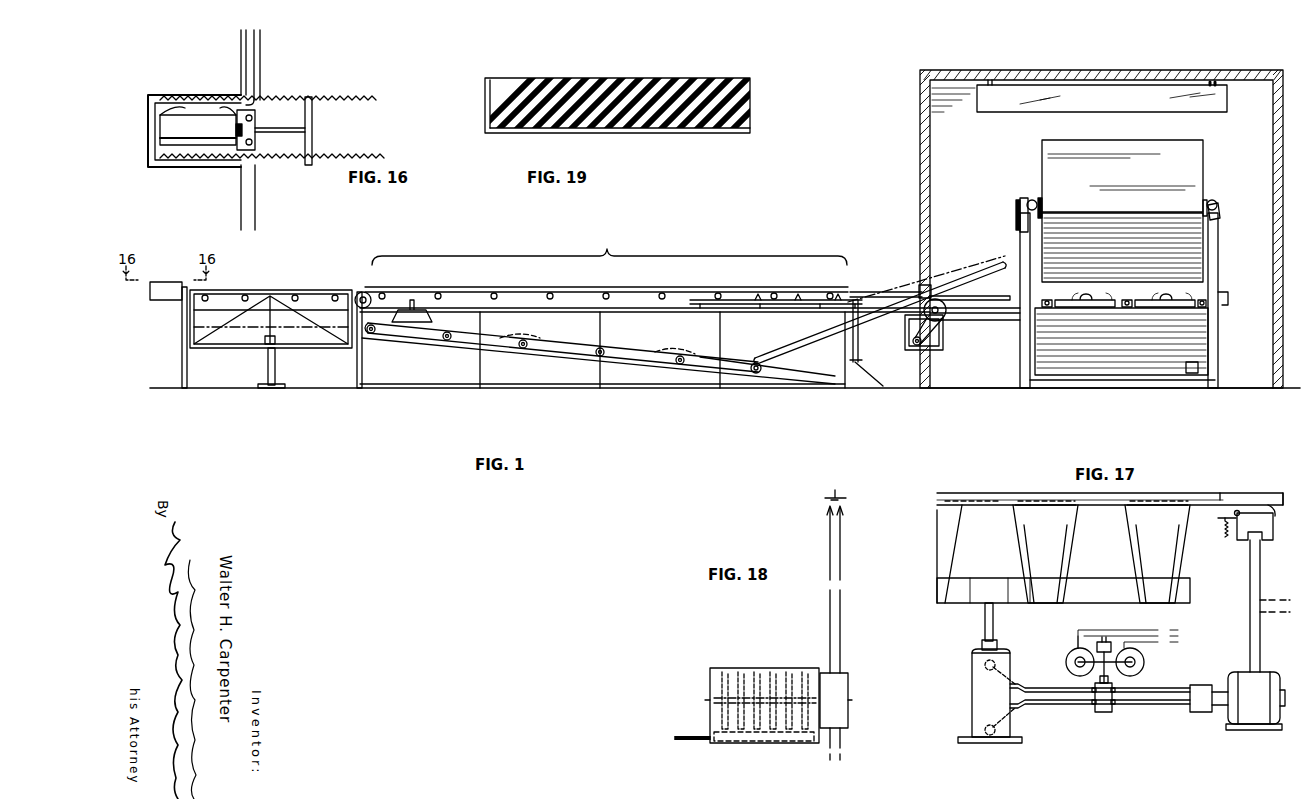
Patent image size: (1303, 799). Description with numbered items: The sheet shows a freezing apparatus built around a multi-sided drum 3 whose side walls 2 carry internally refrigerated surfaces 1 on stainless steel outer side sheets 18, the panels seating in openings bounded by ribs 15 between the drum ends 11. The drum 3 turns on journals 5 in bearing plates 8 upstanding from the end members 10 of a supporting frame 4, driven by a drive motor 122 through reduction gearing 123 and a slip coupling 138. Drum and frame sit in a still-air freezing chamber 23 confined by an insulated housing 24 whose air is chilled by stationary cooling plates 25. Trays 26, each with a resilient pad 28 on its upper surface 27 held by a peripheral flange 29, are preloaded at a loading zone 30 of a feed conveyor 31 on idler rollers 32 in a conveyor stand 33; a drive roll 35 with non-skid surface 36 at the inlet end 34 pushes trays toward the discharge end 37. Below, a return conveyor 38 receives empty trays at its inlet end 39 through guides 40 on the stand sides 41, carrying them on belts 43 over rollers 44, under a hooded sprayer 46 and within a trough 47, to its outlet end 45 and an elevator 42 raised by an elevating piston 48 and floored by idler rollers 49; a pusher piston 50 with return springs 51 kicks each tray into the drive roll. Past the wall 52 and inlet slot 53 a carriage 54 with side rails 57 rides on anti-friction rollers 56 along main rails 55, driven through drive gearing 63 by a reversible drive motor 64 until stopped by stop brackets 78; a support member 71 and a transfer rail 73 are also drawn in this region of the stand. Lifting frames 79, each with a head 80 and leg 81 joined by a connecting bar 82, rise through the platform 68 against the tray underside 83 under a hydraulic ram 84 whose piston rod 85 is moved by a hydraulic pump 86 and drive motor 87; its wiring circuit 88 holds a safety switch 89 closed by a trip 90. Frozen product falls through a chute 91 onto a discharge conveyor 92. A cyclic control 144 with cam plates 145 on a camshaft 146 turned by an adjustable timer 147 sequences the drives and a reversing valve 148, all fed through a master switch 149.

In FIG. 1, the internally refrigerated surface 1 is at (1102, 175).
In FIG. 1, the side wall 2 is at (1154, 175).
In FIG. 1, the drum 3 is at (1208, 160).
In FIG. 1, the supporting frame 4 is at (1222, 230).
In FIG. 1, the journal 5 is at (1222, 212).
In FIG. 1, the bearing plate 8 is at (1028, 202).
In FIG. 1, the end member 10 is at (1020, 252).
In FIG. 1, the drum end 11 is at (1041, 182).
In FIG. 1, the rib 15 is at (1130, 140).
In FIG. 1, the outer side sheet 18 is at (1160, 202).
In FIG. 1, the freezing chamber 23 is at (977, 160).
In FIG. 1, the housing 24 is at (1109, 62).
In FIG. 1, the cooling plates 25 is at (1055, 112).
In FIG. 19, the tray 26 is at (483, 110).
In FIG. 1, the tray 26 is at (424, 286).
In FIG. 19, the upper surface 27 is at (563, 78).
In FIG. 19, the pad 28 is at (647, 78).
In FIG. 19, the peripheral flange 29 is at (486, 103).
In FIG. 1, the loading zone 30 is at (606, 262).
In FIG. 1, the feed conveyor 31 is at (524, 284).
In FIG. 1, the idler roller 32 is at (490, 299).
In FIG. 1, the conveyor stand 33 is at (242, 335).
In FIG. 1, the inlet end 34 is at (363, 279).
In FIG. 1, the drive roll 35 is at (360, 292).
In FIG. 1, the non-skid surface 36 is at (358, 294).
In FIG. 1, the discharge end 37 is at (849, 280).
In FIG. 1, the return conveyor 38 is at (561, 349).
In FIG. 1, the inlet end 39 is at (766, 367).
In FIG. 1, the guide 40 is at (798, 346).
In FIG. 1, the side 41 is at (422, 371).
In FIG. 1, the elevator 42 is at (306, 349).
In FIG. 1, the belt 43 is at (634, 341).
In FIG. 1, the roller 44 is at (373, 333).
In FIG. 1, the outlet end 45 is at (368, 340).
In FIG. 1, the hooded sprayer 46 is at (412, 307).
In FIG. 1, the trough 47 is at (712, 345).
In FIG. 1, the elevating piston 48 is at (267, 370).
In FIG. 1, the idler roller 49 is at (248, 299).
In FIG. 16, the pusher piston 50 is at (314, 132).
In FIG. 1, the pusher piston 50 is at (186, 286).
In FIG. 16, the return spring 51 is at (281, 99).
In FIG. 1, the wall 52 is at (920, 180).
In FIG. 1, the inlet slot 53 is at (920, 290).
In FIG. 1, the carriage 54 is at (802, 296).
In FIG. 1, the main rail 55 is at (1002, 314).
In FIG. 1, the anti-friction roller 56 is at (1202, 301).
In FIG. 1, the side rail 57 is at (700, 299).
In FIG. 1, the drive gearing 63 is at (946, 318).
In FIG. 1, the reversible drive motor 64 is at (916, 350).
In FIG. 1, the platform 68 is at (996, 296).
In FIG. 1, the support leg 71 is at (858, 345).
In FIG. 1, the transfer rail 73 is at (874, 292).
In FIG. 1, the stop bracket 78 is at (1230, 300).
In FIG. 17, the lifting frame 79 is at (1110, 548).
In FIG. 1, the head 80 is at (1176, 297).
In FIG. 17, the head 80 is at (1050, 508).
In FIG. 17, the leg 81 is at (1068, 560).
In FIG. 17, the connecting bar 82 is at (1102, 578).
In FIG. 19, the underside 83 is at (618, 133).
In FIG. 17, the hydraulic ram 84 is at (986, 673).
In FIG. 17, the piston rod 85 is at (993, 621).
In FIG. 17, the hydraulic pump 86 is at (1195, 685).
In FIG. 1, the drive motor 87 is at (1196, 373).
In FIG. 17, the drive motor 87 is at (1266, 672).
In FIG. 17, the wiring circuit 88 is at (1248, 607).
In FIG. 17, the safety switch 89 is at (1250, 511).
In FIG. 17, the trip 90 is at (1271, 517).
In FIG. 1, the chute 91 is at (1185, 342).
In FIG. 1, the discharge conveyor 92 is at (1222, 374).
In FIG. 1, the drive motor 122 is at (1016, 212).
In FIG. 1, the reduction gearing 123 is at (1014, 225).
In FIG. 1, the slip coupling 138 is at (910, 343).
In FIG. 18, the cyclic control 144 is at (764, 686).
In FIG. 18, the cam plate 145 is at (741, 670).
In FIG. 18, the camshaft 146 is at (708, 699).
In FIG. 18, the adjustable timer 147 is at (849, 684).
In FIG. 17, the reversing valve 148 is at (1104, 712).
In FIG. 18, the master switch 149 is at (834, 617).